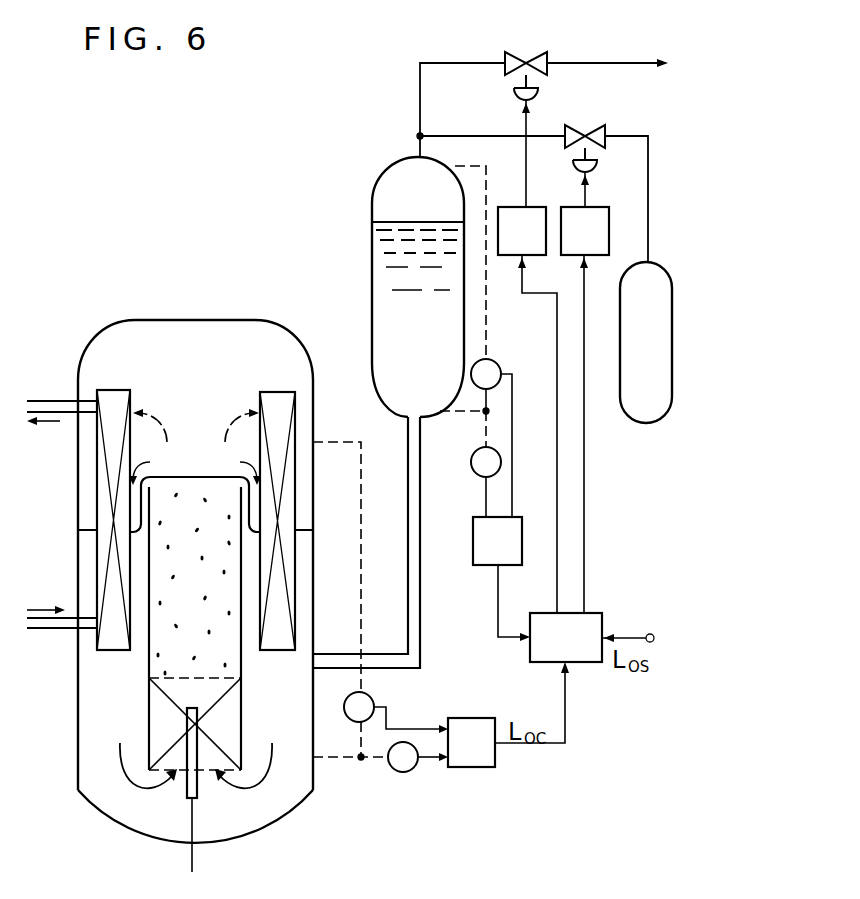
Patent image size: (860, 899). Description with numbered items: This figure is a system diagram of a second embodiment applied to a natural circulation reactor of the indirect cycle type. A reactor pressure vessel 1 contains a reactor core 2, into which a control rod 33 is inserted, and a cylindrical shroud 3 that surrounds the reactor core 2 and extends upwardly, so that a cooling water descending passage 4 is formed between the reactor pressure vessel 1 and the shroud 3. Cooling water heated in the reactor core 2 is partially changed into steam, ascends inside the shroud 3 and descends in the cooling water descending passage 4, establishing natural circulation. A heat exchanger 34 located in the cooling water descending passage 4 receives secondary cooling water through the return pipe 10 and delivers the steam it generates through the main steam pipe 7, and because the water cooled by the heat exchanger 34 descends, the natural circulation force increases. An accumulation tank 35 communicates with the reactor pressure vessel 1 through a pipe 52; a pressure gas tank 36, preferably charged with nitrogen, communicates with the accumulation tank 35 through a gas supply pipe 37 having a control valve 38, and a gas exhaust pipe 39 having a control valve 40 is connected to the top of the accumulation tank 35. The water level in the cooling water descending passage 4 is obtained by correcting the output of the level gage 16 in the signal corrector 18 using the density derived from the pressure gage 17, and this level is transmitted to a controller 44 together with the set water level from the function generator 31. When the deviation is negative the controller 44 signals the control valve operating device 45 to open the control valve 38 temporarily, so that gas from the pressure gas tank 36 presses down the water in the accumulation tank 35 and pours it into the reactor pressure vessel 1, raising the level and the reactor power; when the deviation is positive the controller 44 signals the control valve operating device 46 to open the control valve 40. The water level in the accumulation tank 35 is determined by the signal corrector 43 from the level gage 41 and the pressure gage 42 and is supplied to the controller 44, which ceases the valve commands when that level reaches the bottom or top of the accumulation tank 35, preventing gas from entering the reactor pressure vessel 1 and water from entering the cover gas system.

The reactor pressure vessel 1 is at (184, 320).
The reactor core 2 is at (150, 726).
The shroud 3 is at (148, 660).
The cooling water descending passage 4 is at (80, 563).
The main steam pipe 7 is at (50, 400).
The return pipe 10 is at (40, 630).
The level gage 16 is at (373, 706).
The pressure gage 17 is at (404, 772).
The signal corrector 18 is at (473, 768).
The function generator 31 is at (655, 638).
The control rod 33 is at (198, 790).
The heat exchanger 34 is at (96, 490).
The accumulation tank 35 is at (382, 176).
The pressure gas tank 36 is at (645, 424).
The gas supply pipe 37 is at (468, 136).
The control valve 38 is at (585, 125).
The gas exhaust pipe 39 is at (420, 90).
The control valve 40 is at (538, 52).
The level gage 41 is at (500, 362).
The pressure gage 42 is at (474, 474).
The signal corrector 43 is at (474, 545).
The controller 44 is at (594, 613).
The control valve operating device 45 is at (600, 207).
The control valve operating device 46 is at (536, 207).
The pipe 52 is at (420, 648).